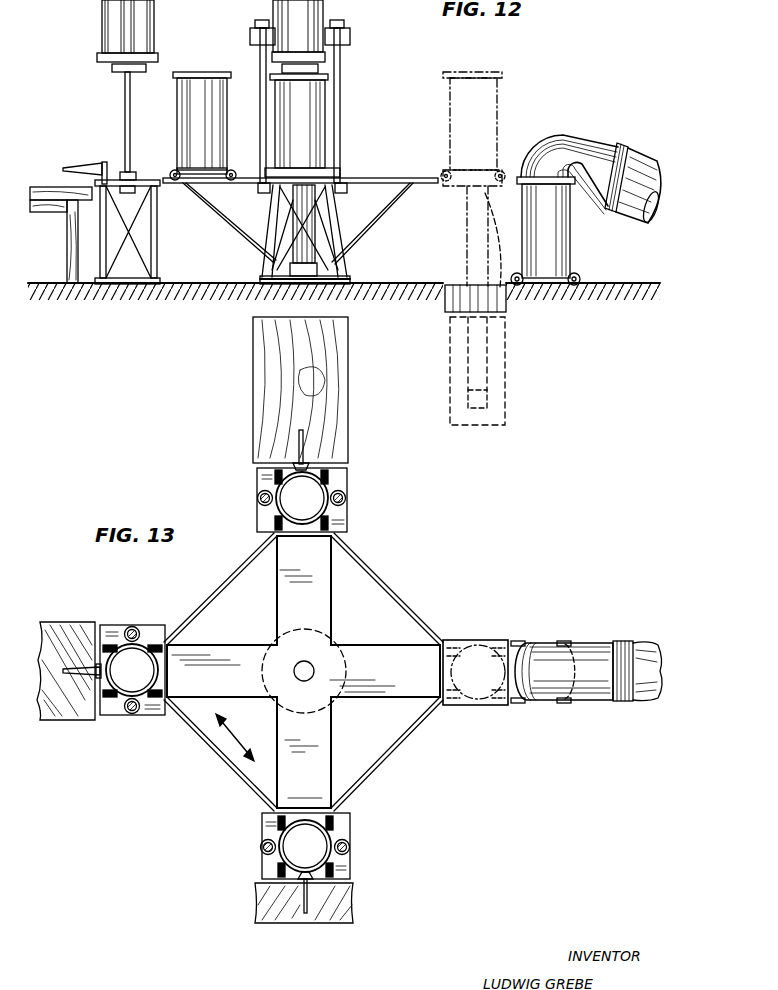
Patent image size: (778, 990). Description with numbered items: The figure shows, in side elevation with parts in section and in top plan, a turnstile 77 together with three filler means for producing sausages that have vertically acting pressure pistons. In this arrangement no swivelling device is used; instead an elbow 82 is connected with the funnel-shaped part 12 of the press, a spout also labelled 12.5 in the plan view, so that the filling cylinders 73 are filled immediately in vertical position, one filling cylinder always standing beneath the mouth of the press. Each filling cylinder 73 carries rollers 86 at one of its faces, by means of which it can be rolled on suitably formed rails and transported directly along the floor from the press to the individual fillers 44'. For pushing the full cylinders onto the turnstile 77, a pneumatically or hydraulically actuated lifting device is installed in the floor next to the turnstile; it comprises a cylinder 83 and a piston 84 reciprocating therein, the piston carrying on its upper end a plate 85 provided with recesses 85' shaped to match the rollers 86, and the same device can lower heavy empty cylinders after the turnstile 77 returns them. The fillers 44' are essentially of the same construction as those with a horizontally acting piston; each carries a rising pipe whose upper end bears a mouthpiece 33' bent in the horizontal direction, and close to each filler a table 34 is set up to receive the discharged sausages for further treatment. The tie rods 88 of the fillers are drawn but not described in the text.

In FIG. 12, the funnel-shaped part 12 is at (647, 154).
In FIG. 13, the discharge nozzle 12.5 is at (649, 644).
In FIG. 12, the mouthpiece 33' is at (85, 159).
In FIG. 13, the mouthpiece 33' is at (222, 671).
In FIG. 12, the table 34 is at (47, 188).
In FIG. 13, the table 34 is at (260, 369).
In FIG. 13, the fillers 44' is at (241, 671).
In FIG. 12, the filling cylinders 73 is at (183, 125).
In FIG. 12, the turnstile 77 is at (373, 184).
In FIG. 13, the turnstile 77 is at (363, 648).
In FIG. 12, the elbow 82 is at (580, 133).
In FIG. 13, the elbow 82 is at (593, 647).
In FIG. 12, the cylinder 83 is at (487, 402).
In FIG. 12, the piston 84 is at (473, 350).
In FIG. 12, the plate 85 is at (468, 283).
In FIG. 13, the plate 85 is at (475, 685).
In FIG. 12, the recesses 85' is at (500, 240).
In FIG. 12, the rollers 86 is at (256, 176).
In FIG. 12, the tie rod 88 is at (126, 96).
In FIG. 13, the tie rod 88 is at (258, 499).